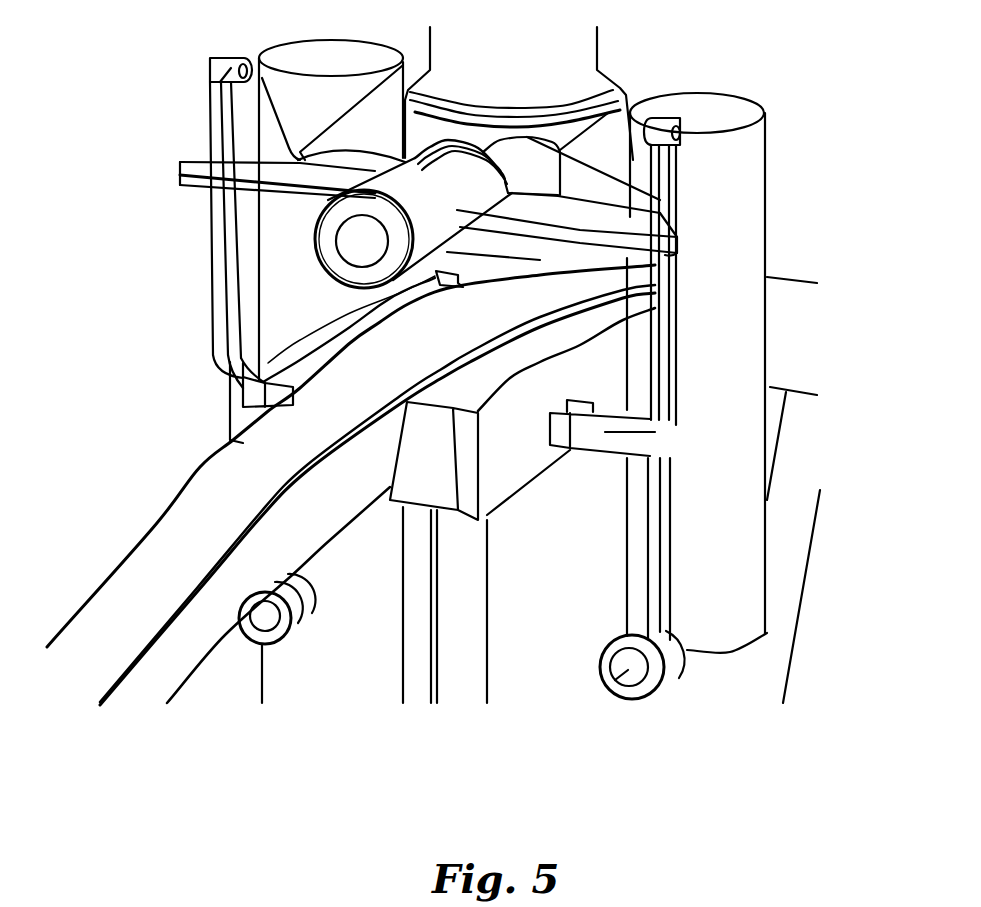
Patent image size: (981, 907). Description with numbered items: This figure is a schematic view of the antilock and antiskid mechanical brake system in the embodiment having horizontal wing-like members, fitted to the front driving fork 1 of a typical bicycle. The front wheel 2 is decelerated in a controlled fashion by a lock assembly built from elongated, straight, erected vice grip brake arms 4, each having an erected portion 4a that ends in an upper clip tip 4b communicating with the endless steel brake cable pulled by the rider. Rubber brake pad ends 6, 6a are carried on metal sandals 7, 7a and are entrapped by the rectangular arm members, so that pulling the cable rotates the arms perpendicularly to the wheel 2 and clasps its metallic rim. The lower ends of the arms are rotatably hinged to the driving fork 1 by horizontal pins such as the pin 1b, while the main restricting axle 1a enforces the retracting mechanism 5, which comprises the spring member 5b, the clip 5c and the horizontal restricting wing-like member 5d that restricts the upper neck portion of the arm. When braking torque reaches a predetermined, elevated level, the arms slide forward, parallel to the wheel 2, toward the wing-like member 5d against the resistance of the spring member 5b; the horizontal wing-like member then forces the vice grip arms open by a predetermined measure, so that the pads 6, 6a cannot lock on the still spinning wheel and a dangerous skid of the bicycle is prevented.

The front driving fork 1 is at (551, 60).
The main restricting axle 1a is at (365, 251).
The horizontal pin 1b is at (260, 615).
The front wheel 2 is at (783, 310).
The vice grip brake arm 4 is at (243, 365).
The erected portion 4a is at (667, 430).
The upper clip tip 4b is at (225, 75).
The retracting mechanism 5 is at (180, 163).
The spring member 5b is at (668, 205).
The clip 5c is at (323, 240).
The horizontal restricting wing-like member 5d is at (322, 198).
The brake pad end 6 is at (237, 410).
The brake pad 6a is at (433, 482).
The left clamp block 7 is at (243, 387).
The metal sandal 7a is at (507, 452).